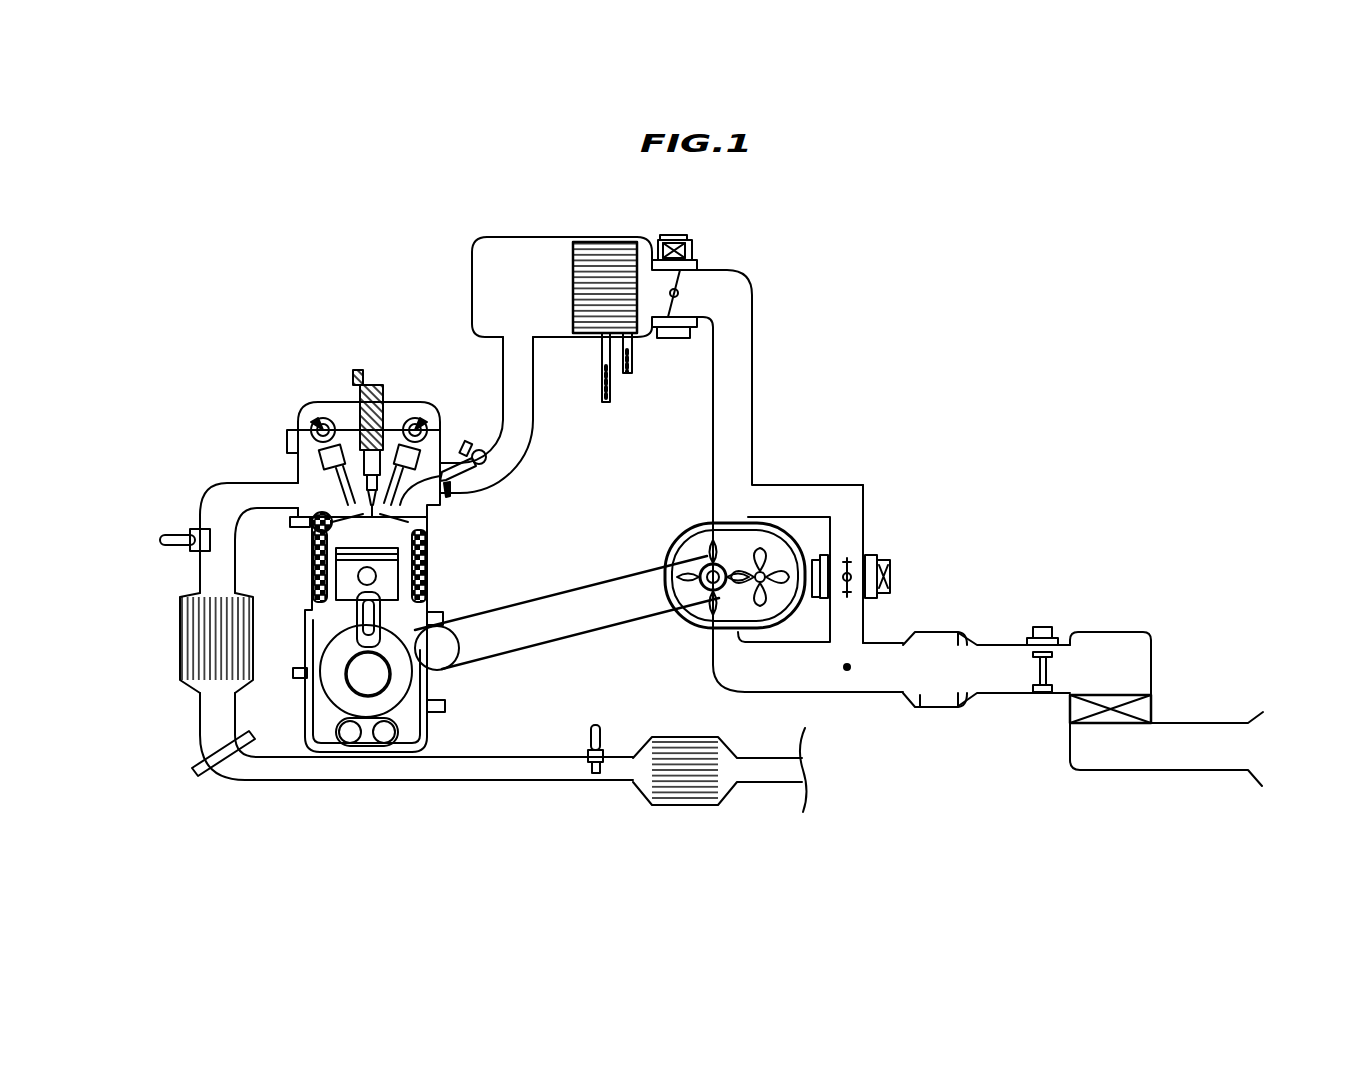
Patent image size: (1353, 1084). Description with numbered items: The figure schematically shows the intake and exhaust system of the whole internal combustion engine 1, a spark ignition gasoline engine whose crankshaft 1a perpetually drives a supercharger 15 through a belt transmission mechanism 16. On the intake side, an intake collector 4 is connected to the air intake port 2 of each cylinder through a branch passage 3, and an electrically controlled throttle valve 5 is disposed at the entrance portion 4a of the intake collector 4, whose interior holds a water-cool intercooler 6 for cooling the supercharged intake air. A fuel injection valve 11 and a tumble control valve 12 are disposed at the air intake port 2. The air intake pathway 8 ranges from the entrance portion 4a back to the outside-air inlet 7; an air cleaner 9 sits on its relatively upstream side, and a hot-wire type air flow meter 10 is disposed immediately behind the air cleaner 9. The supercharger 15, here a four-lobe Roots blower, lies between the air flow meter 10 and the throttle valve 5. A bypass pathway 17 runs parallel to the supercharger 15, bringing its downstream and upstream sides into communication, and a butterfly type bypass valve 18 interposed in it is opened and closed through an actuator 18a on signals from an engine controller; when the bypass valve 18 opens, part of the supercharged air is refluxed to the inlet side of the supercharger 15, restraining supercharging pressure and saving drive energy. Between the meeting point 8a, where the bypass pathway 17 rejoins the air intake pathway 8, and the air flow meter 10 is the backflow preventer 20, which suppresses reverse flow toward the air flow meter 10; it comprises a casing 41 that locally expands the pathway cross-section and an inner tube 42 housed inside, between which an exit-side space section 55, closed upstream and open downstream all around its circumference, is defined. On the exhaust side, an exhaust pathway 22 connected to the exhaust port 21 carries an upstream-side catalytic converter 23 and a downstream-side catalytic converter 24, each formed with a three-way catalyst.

The internal combustion engine 1 is at (295, 395).
The crankshaft 1a is at (370, 676).
The air intake port 2 is at (428, 490).
The branch passage 3 is at (513, 432).
The intake collector 4 is at (498, 236).
The entrance portion 4a is at (712, 286).
The throttle valve 5 is at (683, 340).
The water-cool intercooler 6 is at (610, 262).
The outside-air inlet 7 is at (1252, 760).
The air intake pathway 8 is at (743, 432).
The meeting point 8a is at (847, 668).
The air cleaner 9 is at (1146, 711).
The air flow meter 10 is at (1050, 668).
The fuel injection valve 11 is at (453, 468).
The tumble control valve 12 is at (453, 492).
The supercharger 15 is at (692, 552).
The belt transmission mechanism 16 is at (575, 595).
The bypass pathway 17 is at (848, 528).
The bypass valve 18 is at (850, 552).
The actuator 18a is at (892, 568).
The backflow preventer 20 is at (965, 618).
The exhaust port 21 is at (320, 492).
The exhaust pathway 22 is at (240, 767).
The upstream-side catalytic converter 23 is at (190, 650).
The downstream-side catalytic converter 24 is at (681, 790).
The casing 41 is at (937, 708).
The inner tube 42 is at (920, 708).
The exit-side space section 55 is at (937, 633).